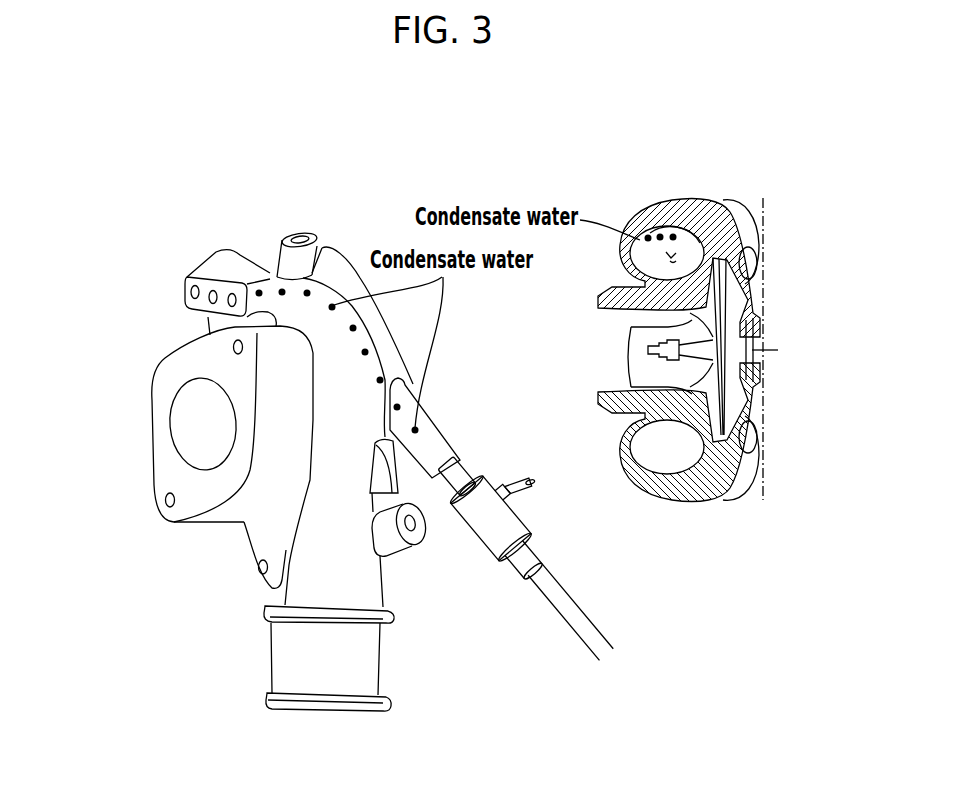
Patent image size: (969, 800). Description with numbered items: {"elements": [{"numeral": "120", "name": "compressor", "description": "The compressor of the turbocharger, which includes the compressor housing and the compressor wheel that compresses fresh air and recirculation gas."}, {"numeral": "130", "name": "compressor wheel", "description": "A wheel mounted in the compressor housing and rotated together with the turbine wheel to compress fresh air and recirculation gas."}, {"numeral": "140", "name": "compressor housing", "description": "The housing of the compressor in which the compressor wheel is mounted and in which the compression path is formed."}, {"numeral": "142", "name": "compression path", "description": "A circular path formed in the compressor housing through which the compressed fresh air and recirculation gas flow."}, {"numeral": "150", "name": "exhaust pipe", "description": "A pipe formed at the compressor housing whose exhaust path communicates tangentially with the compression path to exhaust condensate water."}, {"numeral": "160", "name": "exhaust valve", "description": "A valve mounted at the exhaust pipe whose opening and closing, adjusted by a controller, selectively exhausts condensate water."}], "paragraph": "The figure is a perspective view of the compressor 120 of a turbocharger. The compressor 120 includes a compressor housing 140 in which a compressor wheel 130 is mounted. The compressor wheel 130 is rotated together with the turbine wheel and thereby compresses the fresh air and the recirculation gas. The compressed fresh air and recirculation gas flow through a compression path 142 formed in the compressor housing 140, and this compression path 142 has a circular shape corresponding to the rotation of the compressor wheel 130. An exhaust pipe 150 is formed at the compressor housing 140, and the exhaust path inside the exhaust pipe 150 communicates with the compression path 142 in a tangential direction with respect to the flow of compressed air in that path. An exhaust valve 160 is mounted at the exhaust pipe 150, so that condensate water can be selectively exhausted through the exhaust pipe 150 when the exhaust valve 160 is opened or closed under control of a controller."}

The pipe assembly 120 is at (342, 218).
The turbine wheel 130 is at (633, 327).
The housing 140 is at (162, 367).
The condensate collecting chamber 142 is at (657, 222).
The bracket 150 is at (428, 432).
The sensor 160 is at (507, 525).